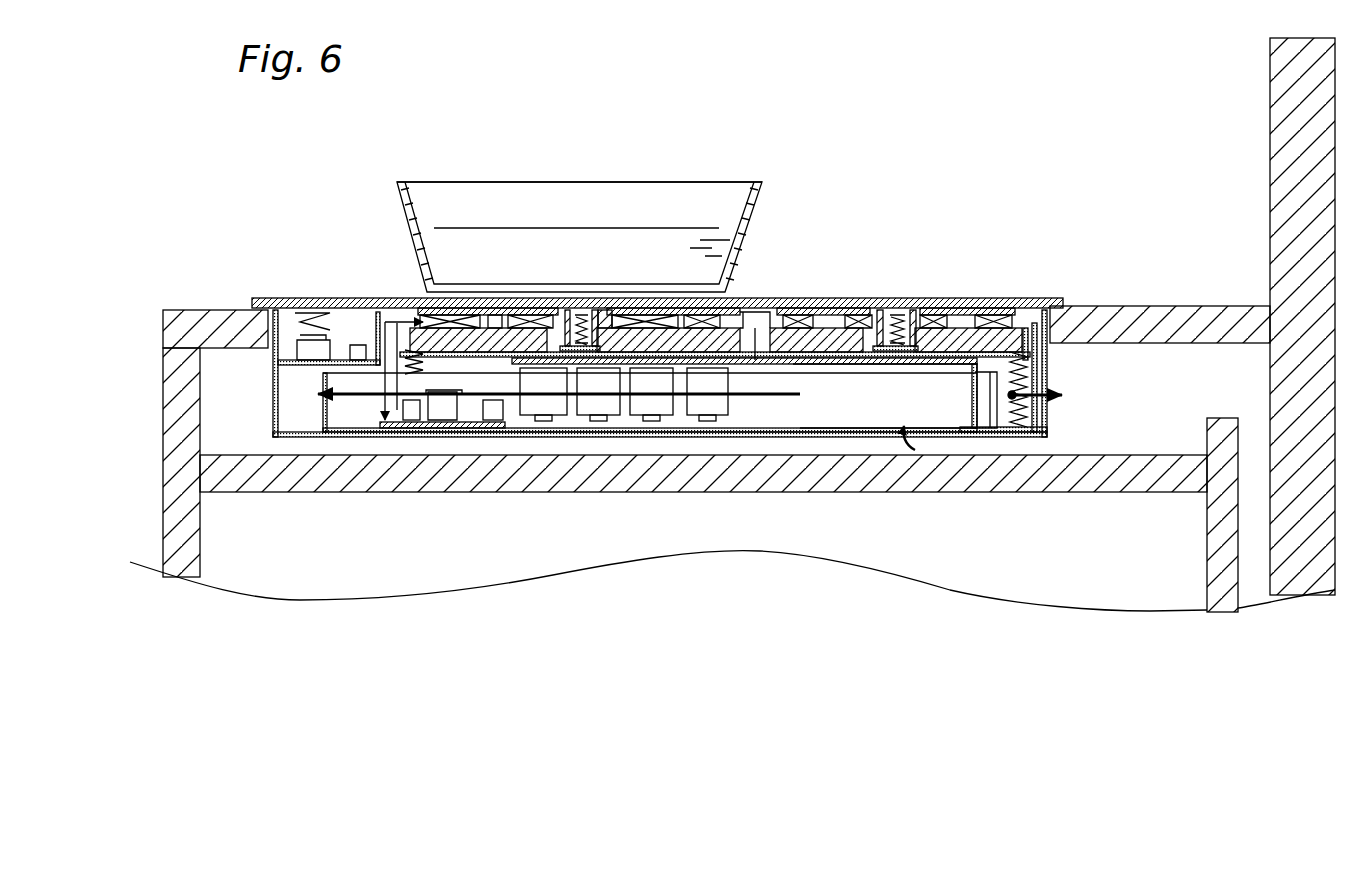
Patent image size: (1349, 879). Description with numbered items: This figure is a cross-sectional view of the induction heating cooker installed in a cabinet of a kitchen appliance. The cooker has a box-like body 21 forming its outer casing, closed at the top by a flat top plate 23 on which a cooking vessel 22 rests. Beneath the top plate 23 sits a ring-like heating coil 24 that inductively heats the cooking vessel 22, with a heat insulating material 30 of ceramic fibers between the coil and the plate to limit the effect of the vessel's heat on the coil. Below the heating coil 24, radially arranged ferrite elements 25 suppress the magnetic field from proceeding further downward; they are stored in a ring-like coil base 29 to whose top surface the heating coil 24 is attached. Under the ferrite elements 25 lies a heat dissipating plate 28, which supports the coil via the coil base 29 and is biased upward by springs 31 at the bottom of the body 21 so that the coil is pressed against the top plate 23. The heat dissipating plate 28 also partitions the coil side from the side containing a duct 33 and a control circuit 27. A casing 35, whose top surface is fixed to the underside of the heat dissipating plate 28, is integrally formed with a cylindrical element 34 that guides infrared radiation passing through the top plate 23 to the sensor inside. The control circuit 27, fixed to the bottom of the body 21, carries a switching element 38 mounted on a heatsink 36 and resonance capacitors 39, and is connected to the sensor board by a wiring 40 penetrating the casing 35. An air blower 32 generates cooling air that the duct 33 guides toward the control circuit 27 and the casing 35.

The body 21 is at (268, 382).
The cooking vessel 22 is at (763, 200).
The top plate 23 is at (848, 303).
The heating coil 24 is at (440, 312).
The ferrite elements 25 is at (433, 328).
The control circuit 27 is at (635, 435).
The heat dissipating plate 28 is at (482, 308).
The coil base 29 is at (378, 335).
The heat insulating material 30 is at (613, 310).
The springs 31 is at (407, 355).
The air blower 32 is at (884, 398).
The duct 33 is at (723, 360).
The cylindrical element 34 is at (497, 325).
The casing 35 is at (472, 368).
The heatsink 36 is at (718, 405).
The switching element 38 is at (707, 419).
The resonance capacitors 39 is at (470, 412).
The wiring 40 is at (487, 384).